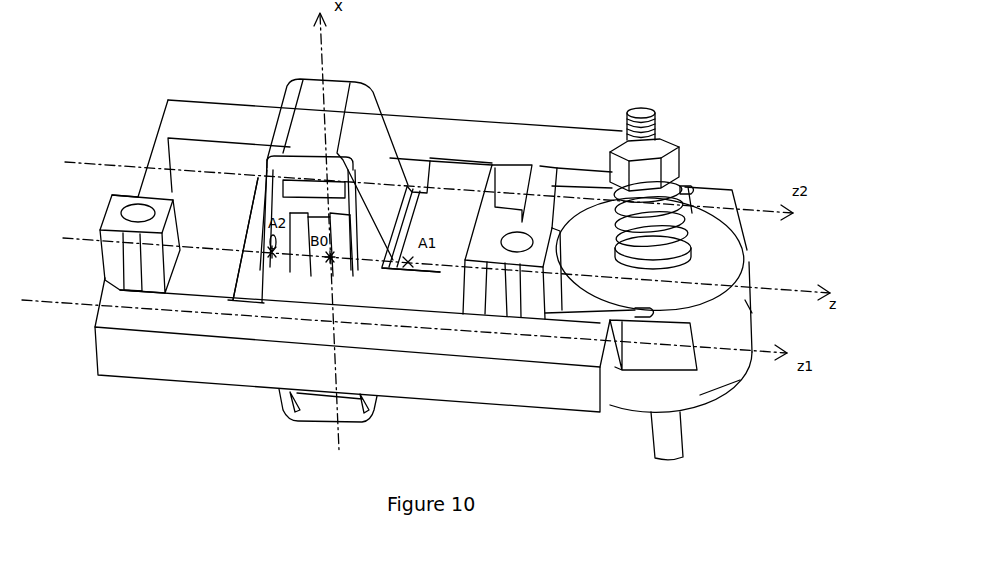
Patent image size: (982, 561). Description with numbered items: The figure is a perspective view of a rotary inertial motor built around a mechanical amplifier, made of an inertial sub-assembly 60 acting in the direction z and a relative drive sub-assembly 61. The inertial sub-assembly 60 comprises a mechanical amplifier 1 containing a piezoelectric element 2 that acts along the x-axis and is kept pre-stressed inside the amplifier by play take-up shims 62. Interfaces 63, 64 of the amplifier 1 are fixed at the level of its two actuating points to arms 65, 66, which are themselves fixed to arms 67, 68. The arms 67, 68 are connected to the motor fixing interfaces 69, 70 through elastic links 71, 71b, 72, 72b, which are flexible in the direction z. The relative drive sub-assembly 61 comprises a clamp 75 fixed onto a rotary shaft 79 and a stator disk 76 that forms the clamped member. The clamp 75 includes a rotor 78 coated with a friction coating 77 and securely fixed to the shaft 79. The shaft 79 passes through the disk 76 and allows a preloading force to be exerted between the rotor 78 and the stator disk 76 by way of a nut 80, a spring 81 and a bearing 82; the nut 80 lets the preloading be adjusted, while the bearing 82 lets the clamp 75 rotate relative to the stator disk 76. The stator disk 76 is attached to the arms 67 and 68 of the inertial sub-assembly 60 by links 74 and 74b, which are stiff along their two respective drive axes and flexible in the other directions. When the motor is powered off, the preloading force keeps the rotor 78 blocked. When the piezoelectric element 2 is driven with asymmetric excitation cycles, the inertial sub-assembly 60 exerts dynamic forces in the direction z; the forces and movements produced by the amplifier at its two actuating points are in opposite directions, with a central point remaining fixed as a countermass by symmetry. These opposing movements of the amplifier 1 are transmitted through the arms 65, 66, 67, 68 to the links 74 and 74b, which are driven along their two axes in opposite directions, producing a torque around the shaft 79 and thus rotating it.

The inertial sub-assembly 60 is at (143, 62).
The relative drive sub-assembly 61 is at (813, 85).
The mechanical amplifier 1 is at (382, 110).
The piezoelectric element 2 is at (310, 262).
The play take-up shims 62 is at (300, 193).
The interface 63 is at (275, 262).
The interface 64 is at (382, 267).
The arm 65 is at (213, 257).
The arm 66 is at (430, 205).
The arm 67 is at (233, 327).
The arm 68 is at (427, 128).
The motor fixing interface 69 is at (115, 212).
The motor fixing interface 70 is at (528, 255).
The elastic link 71 is at (140, 162).
The elastic link 71b is at (110, 262).
The elastic link 72 is at (543, 193).
The elastic link 72b is at (515, 300).
The link 74 is at (687, 183).
The link 74b is at (632, 323).
The clamp 75 is at (767, 150).
The stator disk 76 is at (747, 283).
The friction coating 77 is at (752, 313).
The rotor 78 is at (727, 372).
The rotary shaft 79 is at (652, 110).
The nut 80 is at (660, 137).
The spring 81 is at (683, 190).
The bearing 82 is at (693, 240).